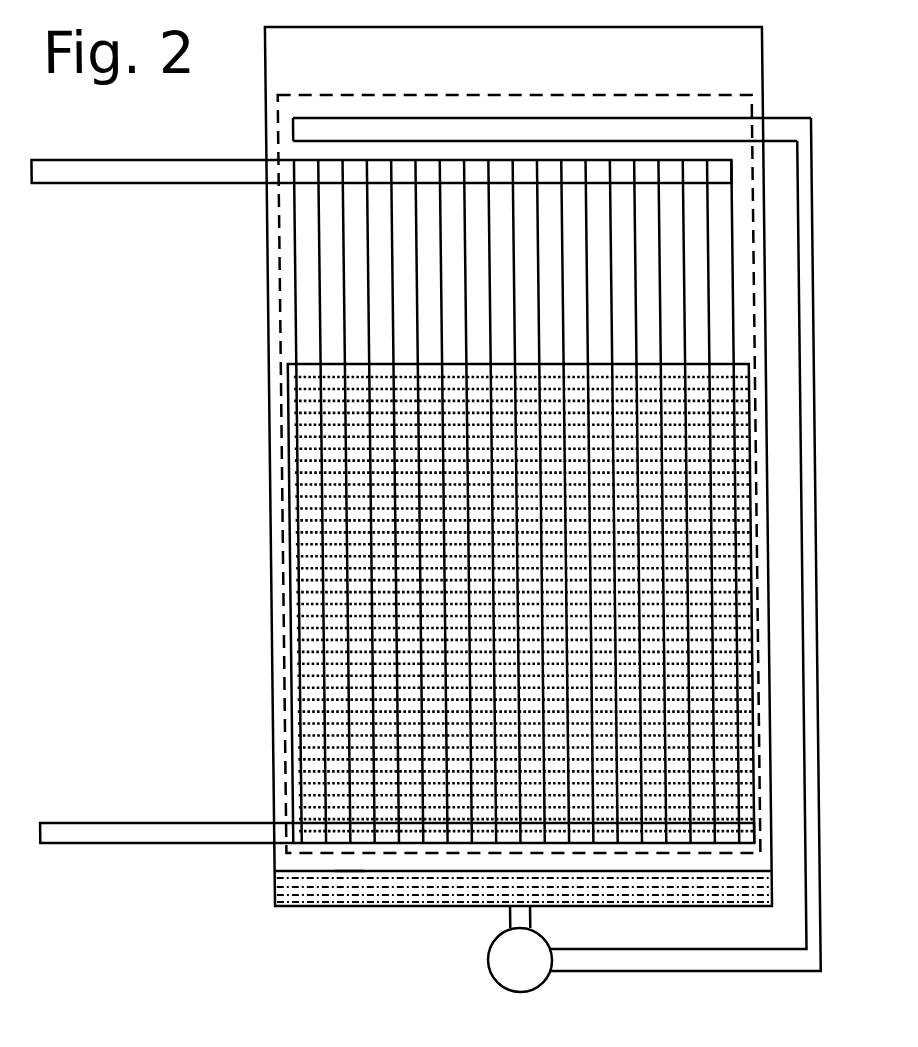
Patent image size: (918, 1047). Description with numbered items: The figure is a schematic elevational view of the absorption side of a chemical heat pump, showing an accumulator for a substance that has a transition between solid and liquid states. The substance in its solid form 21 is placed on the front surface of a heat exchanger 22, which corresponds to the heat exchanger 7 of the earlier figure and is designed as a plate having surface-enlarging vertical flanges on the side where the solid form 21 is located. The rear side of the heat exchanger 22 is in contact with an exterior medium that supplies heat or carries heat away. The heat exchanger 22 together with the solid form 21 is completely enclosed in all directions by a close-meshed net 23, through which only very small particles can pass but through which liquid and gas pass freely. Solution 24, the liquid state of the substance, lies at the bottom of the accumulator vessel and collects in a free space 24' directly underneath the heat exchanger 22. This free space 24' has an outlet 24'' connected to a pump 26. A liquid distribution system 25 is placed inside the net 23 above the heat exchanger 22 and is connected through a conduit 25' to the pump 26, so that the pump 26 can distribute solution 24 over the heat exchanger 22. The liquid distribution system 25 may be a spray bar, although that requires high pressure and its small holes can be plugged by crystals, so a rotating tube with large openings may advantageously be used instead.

The heat exchanger 7 is at (96, 470).
The solid form of the substance 21 is at (336, 412).
The heat exchanger 22 is at (315, 499).
The close-meshed net 23 is at (687, 92).
The solution 24 is at (481, 898).
The free space 24' is at (348, 910).
The outlet 24'' is at (478, 929).
The liquid distribution system 25 is at (551, 96).
The conduit 25' is at (719, 544).
The pump 26 is at (490, 985).